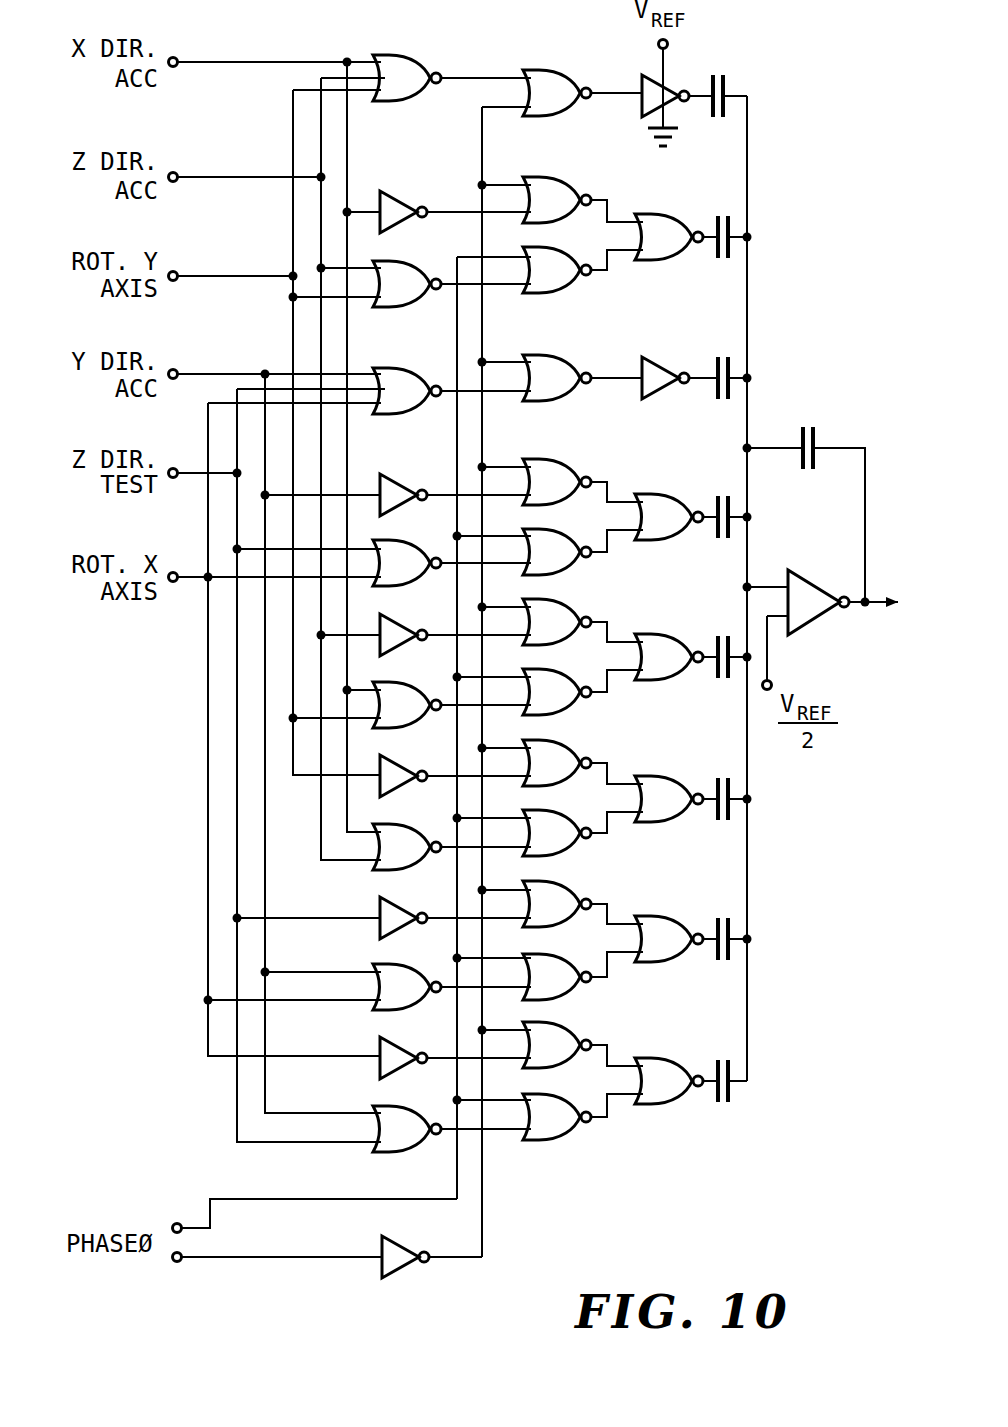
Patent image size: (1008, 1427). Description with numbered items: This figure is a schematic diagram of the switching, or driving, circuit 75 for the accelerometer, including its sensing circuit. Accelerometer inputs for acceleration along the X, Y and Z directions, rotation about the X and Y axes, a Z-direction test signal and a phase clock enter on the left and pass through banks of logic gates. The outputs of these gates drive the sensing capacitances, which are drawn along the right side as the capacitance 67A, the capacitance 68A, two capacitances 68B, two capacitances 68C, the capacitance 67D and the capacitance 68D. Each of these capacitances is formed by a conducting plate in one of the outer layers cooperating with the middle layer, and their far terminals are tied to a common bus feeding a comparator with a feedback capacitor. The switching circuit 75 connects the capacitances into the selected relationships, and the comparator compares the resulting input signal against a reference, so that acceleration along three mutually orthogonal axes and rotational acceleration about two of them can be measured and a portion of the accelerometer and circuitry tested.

The capacitance 67A is at (722, 70).
The capacitance 68A is at (725, 214).
The capacitance 68B is at (725, 497).
The capacitance 68C is at (725, 776).
The capacitance 67D is at (725, 919).
The capacitance 68D is at (725, 1059).
The switching circuit 75 is at (715, 1210).